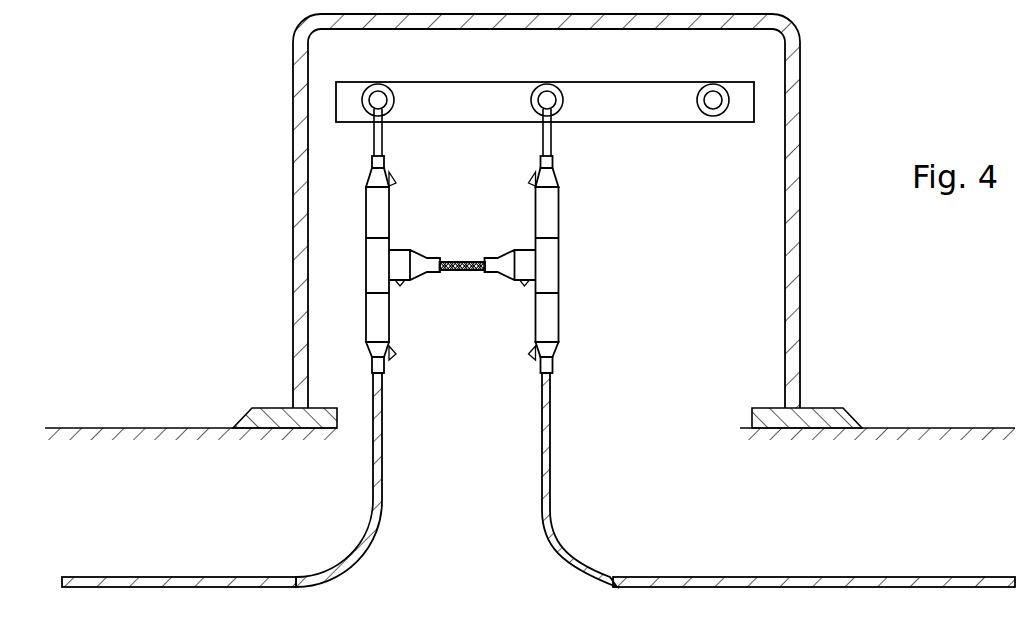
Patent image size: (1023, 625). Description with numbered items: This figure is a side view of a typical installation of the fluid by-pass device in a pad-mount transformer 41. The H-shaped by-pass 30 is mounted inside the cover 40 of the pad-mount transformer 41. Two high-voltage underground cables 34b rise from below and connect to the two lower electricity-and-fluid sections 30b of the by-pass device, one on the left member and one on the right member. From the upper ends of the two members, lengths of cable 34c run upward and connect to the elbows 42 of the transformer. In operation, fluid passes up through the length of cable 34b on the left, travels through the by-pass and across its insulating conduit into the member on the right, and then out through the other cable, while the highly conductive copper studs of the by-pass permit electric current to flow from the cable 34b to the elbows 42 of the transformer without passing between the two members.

The H-shaped by-pass 30 is at (512, 264).
The lower electricity-and-fluid section 30b is at (535, 313).
The high-voltage underground cable 34b is at (541, 435).
The length of cable 34c is at (541, 138).
The cover 40 is at (800, 225).
The pad-mount transformer 41 is at (668, 103).
The elbow 42 is at (394, 98).